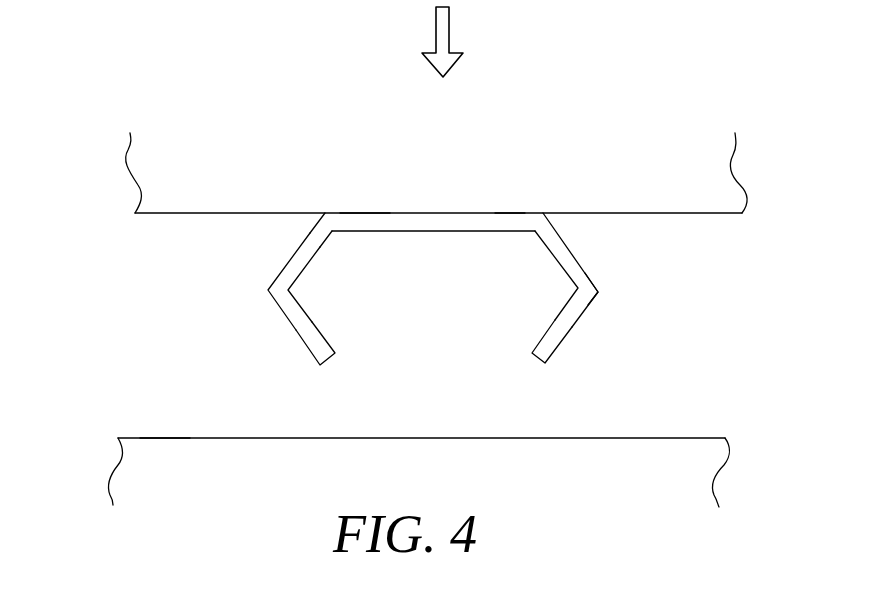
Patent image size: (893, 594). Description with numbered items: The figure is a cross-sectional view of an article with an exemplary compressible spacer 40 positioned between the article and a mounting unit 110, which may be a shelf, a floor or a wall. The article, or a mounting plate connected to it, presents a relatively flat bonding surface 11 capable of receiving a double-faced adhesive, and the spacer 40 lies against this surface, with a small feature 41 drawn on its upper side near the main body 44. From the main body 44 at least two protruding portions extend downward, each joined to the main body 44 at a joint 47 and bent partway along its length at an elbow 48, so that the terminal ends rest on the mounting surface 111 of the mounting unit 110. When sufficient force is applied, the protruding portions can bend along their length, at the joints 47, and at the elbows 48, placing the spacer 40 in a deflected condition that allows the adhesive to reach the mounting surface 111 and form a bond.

The bonding surface 11 is at (168, 217).
The compressible spacer 40 is at (447, 287).
The central bump of clip 41 is at (498, 214).
The main body 44 is at (365, 219).
The joint 47 is at (337, 218).
The elbow 48 is at (583, 288).
The mounting unit 110 is at (128, 475).
The mounting surface 111 is at (165, 437).